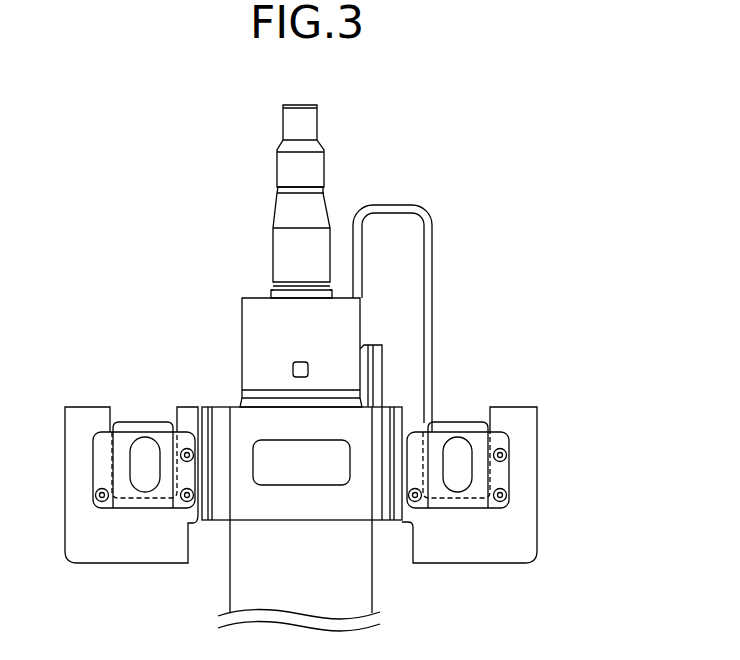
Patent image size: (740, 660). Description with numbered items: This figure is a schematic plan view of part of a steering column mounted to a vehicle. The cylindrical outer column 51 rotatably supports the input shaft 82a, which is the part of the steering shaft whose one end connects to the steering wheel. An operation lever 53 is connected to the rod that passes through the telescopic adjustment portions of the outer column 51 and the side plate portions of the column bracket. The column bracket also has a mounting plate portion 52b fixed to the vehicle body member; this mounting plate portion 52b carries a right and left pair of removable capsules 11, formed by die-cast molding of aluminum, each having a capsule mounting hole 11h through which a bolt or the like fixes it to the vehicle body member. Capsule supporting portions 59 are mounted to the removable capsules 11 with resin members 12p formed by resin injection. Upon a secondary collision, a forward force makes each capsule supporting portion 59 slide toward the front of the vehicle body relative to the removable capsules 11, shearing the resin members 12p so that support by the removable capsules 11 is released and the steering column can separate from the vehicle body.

The input shaft 82a is at (276, 257).
The outer column 51 is at (268, 320).
The operation lever 53 is at (428, 297).
The removable capsule 11 is at (132, 428).
The capsule mounting hole 11h is at (156, 444).
The resin member 12p is at (96, 495).
The capsule supporting portion 59 is at (527, 512).
The mounting plate portion 52b is at (342, 507).